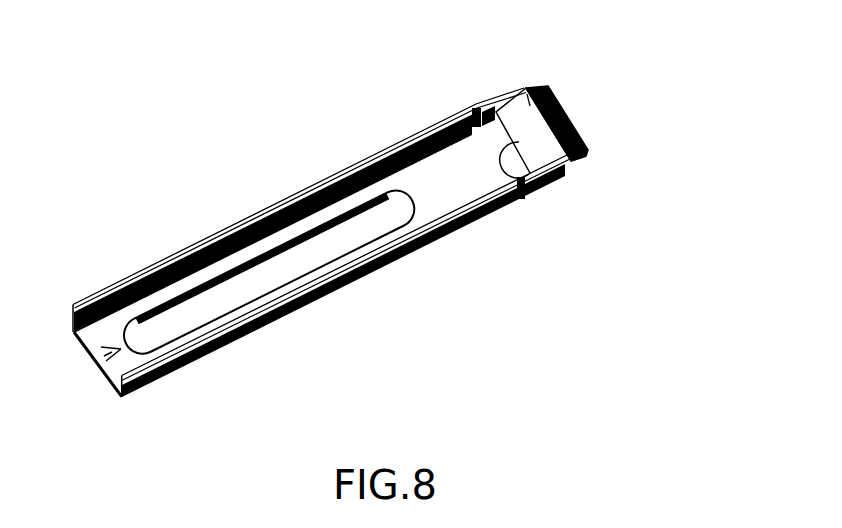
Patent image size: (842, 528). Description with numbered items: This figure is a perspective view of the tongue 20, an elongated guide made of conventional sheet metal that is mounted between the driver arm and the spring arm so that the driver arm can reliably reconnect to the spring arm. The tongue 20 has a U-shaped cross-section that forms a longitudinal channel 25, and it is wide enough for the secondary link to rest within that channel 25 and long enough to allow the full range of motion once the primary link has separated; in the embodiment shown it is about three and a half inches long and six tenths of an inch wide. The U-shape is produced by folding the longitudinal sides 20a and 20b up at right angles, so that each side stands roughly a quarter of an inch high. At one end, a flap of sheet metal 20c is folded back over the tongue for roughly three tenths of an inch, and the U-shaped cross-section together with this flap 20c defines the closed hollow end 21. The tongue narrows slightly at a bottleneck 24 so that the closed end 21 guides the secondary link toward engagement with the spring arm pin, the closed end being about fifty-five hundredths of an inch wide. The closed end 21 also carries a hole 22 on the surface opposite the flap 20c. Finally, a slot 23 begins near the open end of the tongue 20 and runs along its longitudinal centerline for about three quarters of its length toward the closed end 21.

The tongue 20 is at (267, 131).
The longitudinal side 20a is at (415, 134).
The longitudinal side 20b is at (440, 236).
The flap 20c is at (552, 87).
The closed end 21 is at (585, 159).
The hole 22 is at (503, 168).
The slot 23 is at (313, 262).
The bottleneck 24 is at (481, 107).
The channel 25 is at (104, 356).